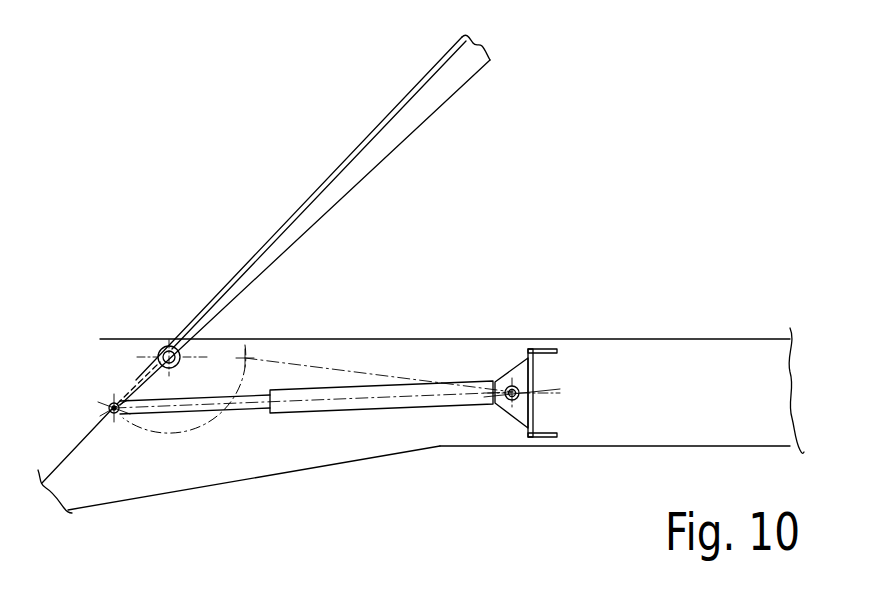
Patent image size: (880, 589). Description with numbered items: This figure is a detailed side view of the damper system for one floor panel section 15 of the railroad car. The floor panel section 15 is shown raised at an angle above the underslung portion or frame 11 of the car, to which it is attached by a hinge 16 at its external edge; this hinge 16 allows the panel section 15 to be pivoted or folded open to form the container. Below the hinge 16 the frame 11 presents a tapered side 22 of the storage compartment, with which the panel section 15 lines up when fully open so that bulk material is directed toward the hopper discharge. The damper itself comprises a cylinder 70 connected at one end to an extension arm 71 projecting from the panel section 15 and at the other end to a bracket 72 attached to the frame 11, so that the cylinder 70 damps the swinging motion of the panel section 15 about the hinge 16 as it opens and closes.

The underslung portion 11 is at (241, 462).
The floor panel section 15 is at (327, 190).
The hinge 16 is at (167, 343).
The tapered side 22 is at (68, 456).
The cylinder 70 is at (457, 397).
The extension arm 71 is at (127, 382).
The bracket 72 is at (535, 377).